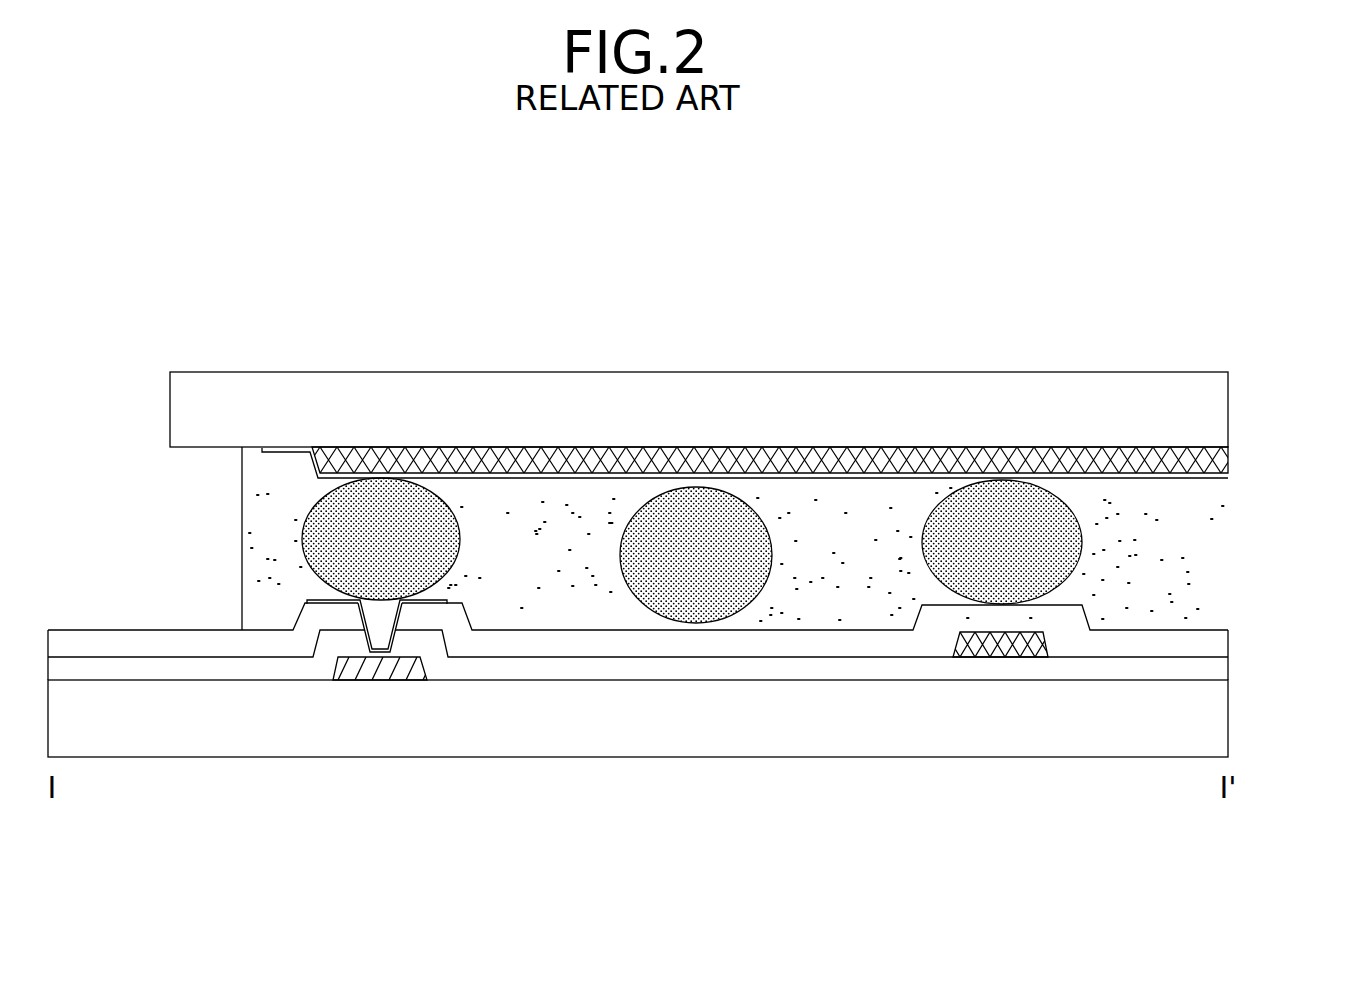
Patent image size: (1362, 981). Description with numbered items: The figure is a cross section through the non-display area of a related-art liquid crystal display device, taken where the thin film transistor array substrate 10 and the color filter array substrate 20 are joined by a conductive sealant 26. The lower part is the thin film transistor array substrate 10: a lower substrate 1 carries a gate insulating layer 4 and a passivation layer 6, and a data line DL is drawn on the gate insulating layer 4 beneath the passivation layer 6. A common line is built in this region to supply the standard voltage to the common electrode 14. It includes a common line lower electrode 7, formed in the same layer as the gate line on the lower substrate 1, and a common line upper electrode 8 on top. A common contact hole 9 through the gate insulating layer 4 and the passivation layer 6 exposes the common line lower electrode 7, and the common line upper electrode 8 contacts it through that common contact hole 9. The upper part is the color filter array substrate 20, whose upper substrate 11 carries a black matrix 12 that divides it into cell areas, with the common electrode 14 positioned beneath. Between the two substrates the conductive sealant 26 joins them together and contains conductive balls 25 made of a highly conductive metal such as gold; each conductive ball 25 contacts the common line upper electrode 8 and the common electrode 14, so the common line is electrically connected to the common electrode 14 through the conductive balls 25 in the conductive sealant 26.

The lower substrate 1 is at (1222, 718).
The gate insulating layer 4 is at (1222, 673).
The passivation layer 6 is at (1222, 640).
The common line lower electrode 7 is at (361, 668).
The common line upper electrode 8 is at (440, 597).
The common contact hole 9 is at (380, 638).
The thin film transistor array substrate 10 is at (696, 704).
The upper substrate 11 is at (1222, 406).
The black matrix 12 is at (1222, 452).
The common electrode 14 is at (1222, 476).
The color filter array substrate 20 is at (757, 402).
The conductive ball 25 is at (457, 535).
The conductive sealant 26 is at (1222, 541).
The data line DL is at (997, 643).